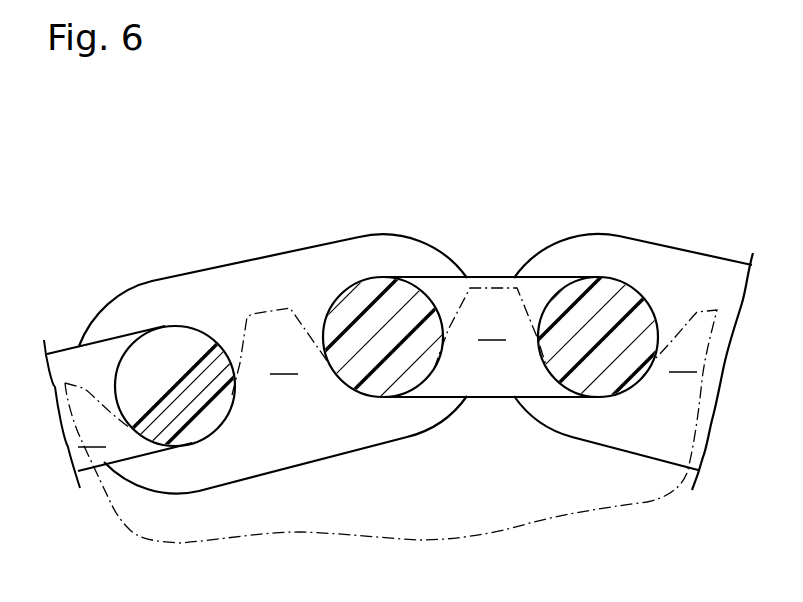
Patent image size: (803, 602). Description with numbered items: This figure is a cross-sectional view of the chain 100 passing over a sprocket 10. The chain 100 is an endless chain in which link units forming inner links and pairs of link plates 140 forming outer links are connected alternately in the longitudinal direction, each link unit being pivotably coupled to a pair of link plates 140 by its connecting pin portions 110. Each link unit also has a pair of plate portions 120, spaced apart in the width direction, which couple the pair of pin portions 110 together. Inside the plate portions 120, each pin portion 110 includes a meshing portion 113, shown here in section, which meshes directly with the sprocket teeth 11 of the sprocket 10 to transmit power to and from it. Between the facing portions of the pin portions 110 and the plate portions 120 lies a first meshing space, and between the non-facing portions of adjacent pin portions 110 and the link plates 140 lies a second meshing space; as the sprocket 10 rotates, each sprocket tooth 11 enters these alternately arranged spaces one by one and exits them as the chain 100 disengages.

The chain 100 is at (453, 122).
The sprocket 10 is at (308, 307).
The sprocket tooth 11 is at (264, 309).
The connecting pin portion 110 is at (203, 329).
The meshing portion 113 is at (190, 405).
The plate portion 120 is at (108, 340).
The link plate 140 is at (323, 467).